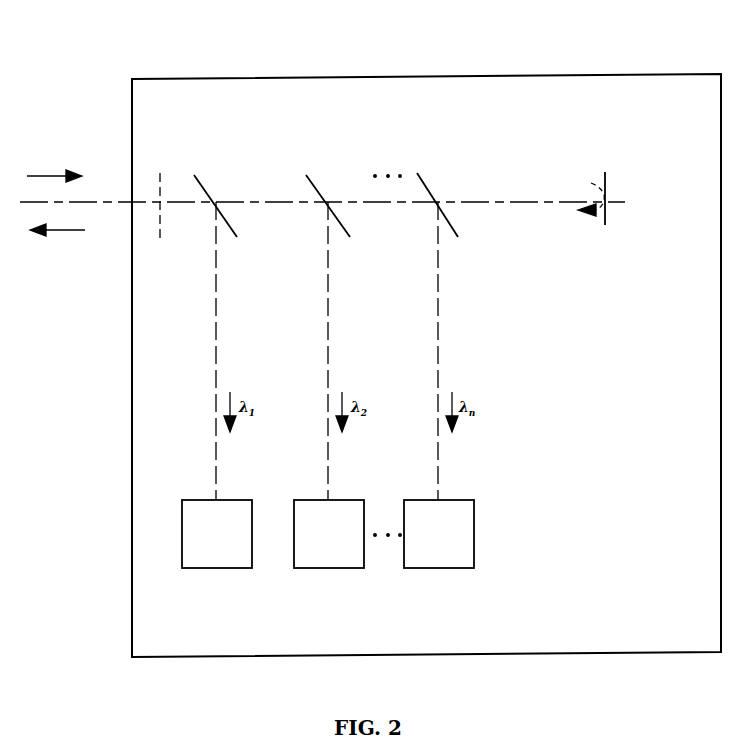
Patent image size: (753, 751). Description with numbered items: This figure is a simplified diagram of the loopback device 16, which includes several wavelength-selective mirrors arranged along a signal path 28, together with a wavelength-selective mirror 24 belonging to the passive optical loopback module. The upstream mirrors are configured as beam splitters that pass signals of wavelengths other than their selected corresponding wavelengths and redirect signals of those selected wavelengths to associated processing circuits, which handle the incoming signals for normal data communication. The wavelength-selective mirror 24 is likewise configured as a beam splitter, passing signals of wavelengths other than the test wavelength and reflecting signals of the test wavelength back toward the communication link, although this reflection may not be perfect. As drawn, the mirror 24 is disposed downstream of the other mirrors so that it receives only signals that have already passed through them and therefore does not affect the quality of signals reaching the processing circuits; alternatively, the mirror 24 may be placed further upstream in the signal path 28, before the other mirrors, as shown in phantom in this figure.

The loopback device 16 is at (553, 76).
The wavelength-selective mirror 24 is at (161, 175).
The signal path 28 is at (524, 203).